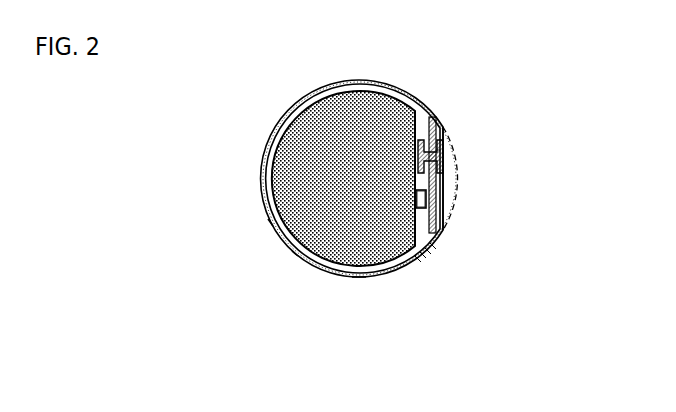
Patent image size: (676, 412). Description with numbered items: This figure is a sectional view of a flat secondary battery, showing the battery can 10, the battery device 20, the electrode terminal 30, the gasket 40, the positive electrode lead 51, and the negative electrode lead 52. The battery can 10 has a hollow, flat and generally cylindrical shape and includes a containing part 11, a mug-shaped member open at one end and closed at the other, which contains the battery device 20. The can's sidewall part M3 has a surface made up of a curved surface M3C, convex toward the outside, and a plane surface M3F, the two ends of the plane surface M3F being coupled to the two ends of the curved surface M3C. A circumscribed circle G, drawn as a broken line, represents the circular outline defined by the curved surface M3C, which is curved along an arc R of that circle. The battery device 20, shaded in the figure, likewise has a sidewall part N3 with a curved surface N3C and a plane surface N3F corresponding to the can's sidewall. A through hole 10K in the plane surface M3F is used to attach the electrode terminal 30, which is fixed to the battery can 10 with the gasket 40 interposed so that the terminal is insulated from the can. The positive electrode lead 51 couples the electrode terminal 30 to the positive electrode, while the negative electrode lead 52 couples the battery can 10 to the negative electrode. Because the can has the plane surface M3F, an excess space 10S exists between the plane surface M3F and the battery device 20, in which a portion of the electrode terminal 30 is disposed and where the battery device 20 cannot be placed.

The arc R is at (290, 107).
The battery can 10 is at (297, 178).
The containing part 11 is at (262, 181).
The battery device 20 is at (288, 147).
The electrode terminal 30 is at (447, 152).
The gasket 40 is at (445, 143).
The positive electrode lead 51 is at (437, 115).
The negative electrode lead 52 is at (363, 282).
The through hole 10K is at (447, 160).
The excess space 10S is at (430, 267).
The circumscribed circle G is at (458, 190).
The sidewall part M3 is at (497, 217).
The plane surface M3F is at (433, 203).
The curved surface M3C is at (265, 224).
The sidewall part N3 is at (490, 233).
The plane surface N3F is at (437, 238).
The curved surface N3C is at (290, 254).